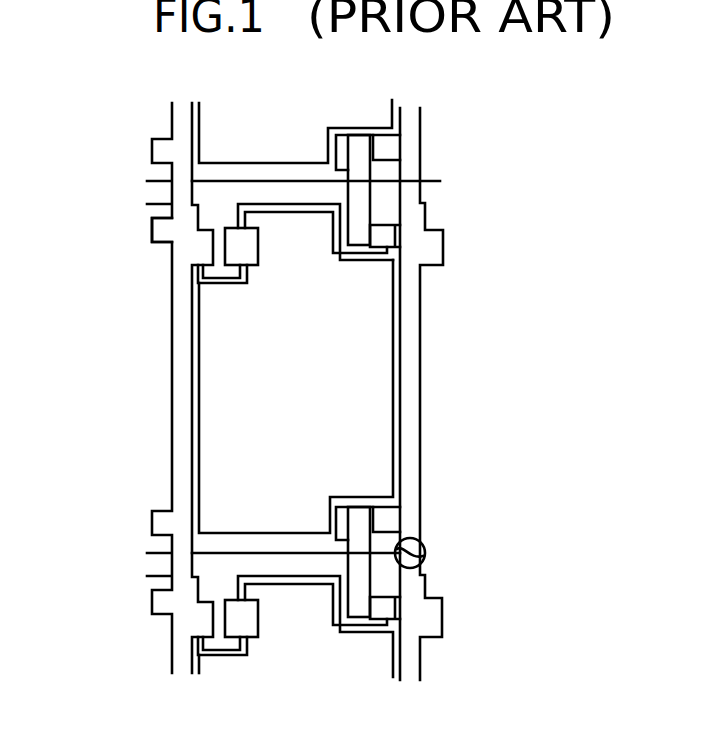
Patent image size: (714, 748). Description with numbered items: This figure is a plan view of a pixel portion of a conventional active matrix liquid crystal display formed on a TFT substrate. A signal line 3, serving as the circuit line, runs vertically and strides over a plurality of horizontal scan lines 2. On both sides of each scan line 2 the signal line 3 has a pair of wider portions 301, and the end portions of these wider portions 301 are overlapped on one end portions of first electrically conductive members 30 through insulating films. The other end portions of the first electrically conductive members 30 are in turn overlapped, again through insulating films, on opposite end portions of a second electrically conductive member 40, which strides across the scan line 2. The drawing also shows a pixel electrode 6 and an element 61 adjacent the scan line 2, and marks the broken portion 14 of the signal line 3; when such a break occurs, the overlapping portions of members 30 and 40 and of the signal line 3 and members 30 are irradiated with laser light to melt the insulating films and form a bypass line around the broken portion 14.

The scan line 2 is at (265, 190).
The wider portion 301 is at (152, 234).
The contact / storage electrode portion 61 is at (232, 250).
The pixel electrode 6 is at (380, 335).
The second electrically conductive member 40 is at (365, 192).
The first electrically conductive member 30 is at (375, 154).
The signal line 3 is at (422, 400).
The broken portion 14 is at (425, 553).